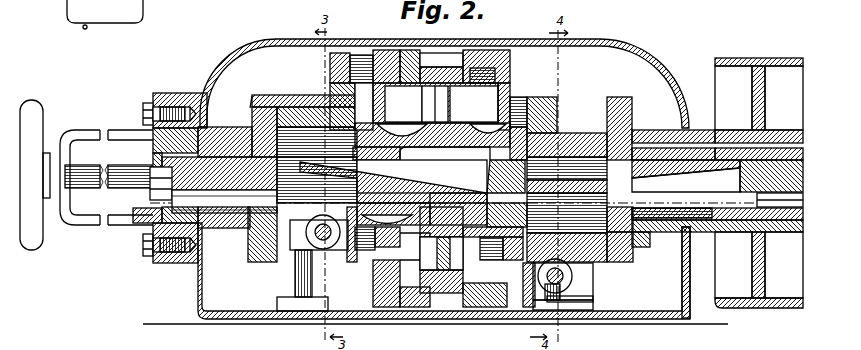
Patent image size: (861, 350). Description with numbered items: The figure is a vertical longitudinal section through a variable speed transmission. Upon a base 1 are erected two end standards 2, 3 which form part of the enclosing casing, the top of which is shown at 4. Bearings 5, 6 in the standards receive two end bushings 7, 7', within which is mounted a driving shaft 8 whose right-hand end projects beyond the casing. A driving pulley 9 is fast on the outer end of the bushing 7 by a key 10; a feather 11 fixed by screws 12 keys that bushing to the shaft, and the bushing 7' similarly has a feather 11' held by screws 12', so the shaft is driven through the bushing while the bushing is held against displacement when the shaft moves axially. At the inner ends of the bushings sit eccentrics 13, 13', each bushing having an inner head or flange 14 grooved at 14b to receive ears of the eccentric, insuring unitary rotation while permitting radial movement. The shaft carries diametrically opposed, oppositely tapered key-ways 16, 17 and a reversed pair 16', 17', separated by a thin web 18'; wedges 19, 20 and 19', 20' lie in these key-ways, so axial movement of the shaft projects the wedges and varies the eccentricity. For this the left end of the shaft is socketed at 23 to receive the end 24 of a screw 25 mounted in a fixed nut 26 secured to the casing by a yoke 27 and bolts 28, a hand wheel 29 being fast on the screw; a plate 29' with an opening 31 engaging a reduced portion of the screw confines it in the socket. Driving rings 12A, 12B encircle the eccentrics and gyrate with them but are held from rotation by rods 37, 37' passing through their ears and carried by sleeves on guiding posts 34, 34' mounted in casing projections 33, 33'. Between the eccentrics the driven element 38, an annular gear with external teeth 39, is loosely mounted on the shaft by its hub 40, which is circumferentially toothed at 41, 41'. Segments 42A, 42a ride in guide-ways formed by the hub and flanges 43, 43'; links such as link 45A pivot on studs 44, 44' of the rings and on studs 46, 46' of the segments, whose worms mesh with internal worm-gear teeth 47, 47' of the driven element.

The base 1 is at (403, 324).
The end standard 2 is at (689, 266).
The end standard 3 is at (197, 288).
The top of casing 4 is at (618, 44).
The bearing 5 is at (703, 131).
The bearing 6 is at (218, 142).
The end bushing 7 is at (438, 152).
The end bushing 7' is at (225, 133).
The driving shaft 8 is at (740, 181).
The driving pulley 9 is at (757, 58).
The key 10 is at (776, 138).
The feather 11 is at (686, 180).
The feather 11' is at (224, 227).
The screws 12 is at (717, 230).
The screws 12' is at (252, 234).
The driving ring 12A is at (563, 141).
The driving ring 12B is at (297, 100).
The eccentric 13 is at (620, 259).
The eccentric 13' is at (312, 99).
The inner head or flange 14 is at (632, 105).
The groove 14b is at (250, 101).
The key-way 16 is at (686, 144).
The key-way 16' is at (497, 176).
The key-way 17 is at (717, 236).
The key-way 17' is at (458, 194).
The web 18' is at (393, 182).
The wedge 19 is at (567, 150).
The wedge 19' is at (376, 161).
The wedge 20 is at (648, 252).
The wedge 20' is at (331, 180).
The socket 23 is at (140, 221).
The end of screw 24 is at (158, 192).
The screw 25 is at (88, 166).
The fixed nut 26 is at (47, 153).
The yoke 27 is at (76, 130).
The bolts 28 is at (146, 103).
The hand wheel 29 is at (32, 167).
The plate 29' is at (145, 157).
The opening 31 is at (158, 183).
The internal projection 33 is at (587, 307).
The internal projection 33' is at (282, 302).
The guiding post 34 is at (594, 295).
The guiding post 34' is at (277, 273).
The rod 37 is at (576, 279).
The rod 37' is at (309, 245).
The driven element 38 is at (442, 284).
The external teeth 39 is at (443, 57).
The hub 40 is at (470, 125).
The circumferential teeth 41 is at (521, 285).
The circumferential teeth 41' is at (352, 245).
The segment 42a is at (383, 106).
The segment 42A is at (514, 96).
The flange 43 is at (486, 53).
The flange 43' is at (410, 53).
The stud 44 is at (560, 114).
The stud 44' is at (357, 52).
The link 45A is at (528, 99).
The stud 46 is at (493, 272).
The stud 46' is at (392, 267).
The internal teeth 47 is at (515, 77).
The internal teeth 47' is at (383, 53).